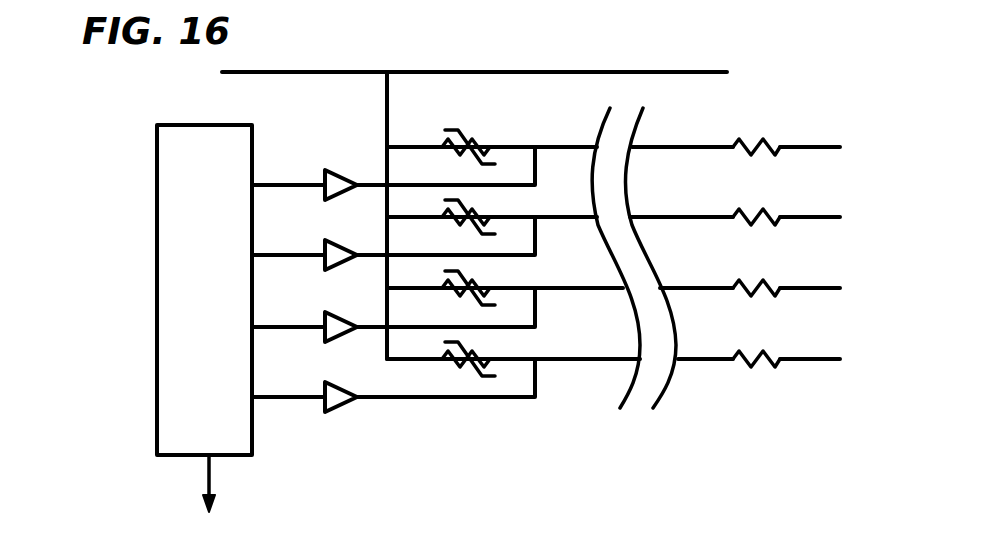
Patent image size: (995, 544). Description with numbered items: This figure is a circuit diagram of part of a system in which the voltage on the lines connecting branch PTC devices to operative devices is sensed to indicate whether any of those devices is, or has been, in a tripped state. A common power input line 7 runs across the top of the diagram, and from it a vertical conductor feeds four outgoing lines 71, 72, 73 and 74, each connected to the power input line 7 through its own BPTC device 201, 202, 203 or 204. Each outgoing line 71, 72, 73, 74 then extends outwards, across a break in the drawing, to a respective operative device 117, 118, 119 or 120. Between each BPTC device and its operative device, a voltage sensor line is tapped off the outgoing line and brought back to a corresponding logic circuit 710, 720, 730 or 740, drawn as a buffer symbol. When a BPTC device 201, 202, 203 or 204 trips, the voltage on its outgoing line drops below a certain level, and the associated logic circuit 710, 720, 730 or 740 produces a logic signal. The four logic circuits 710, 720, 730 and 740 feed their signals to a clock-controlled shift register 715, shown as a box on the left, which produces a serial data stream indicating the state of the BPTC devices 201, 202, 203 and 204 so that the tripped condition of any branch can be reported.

The power input line 7 is at (545, 70).
The shift register 715 is at (166, 249).
The logic circuit 710 is at (346, 176).
The logic circuit 720 is at (346, 250).
The logic circuit 730 is at (346, 322).
The logic circuit 740 is at (346, 392).
The BPTC device 201 is at (485, 146).
The BPTC device 202 is at (493, 220).
The BPTC device 203 is at (493, 293).
The BPTC device 204 is at (447, 363).
The outgoing line 71 is at (665, 146).
The outgoing line 72 is at (668, 215).
The outgoing line 73 is at (688, 286).
The outgoing line 74 is at (700, 360).
The operative device 117 is at (777, 145).
The operative device 118 is at (777, 212).
The operative device 119 is at (775, 283).
The operative device 120 is at (777, 353).